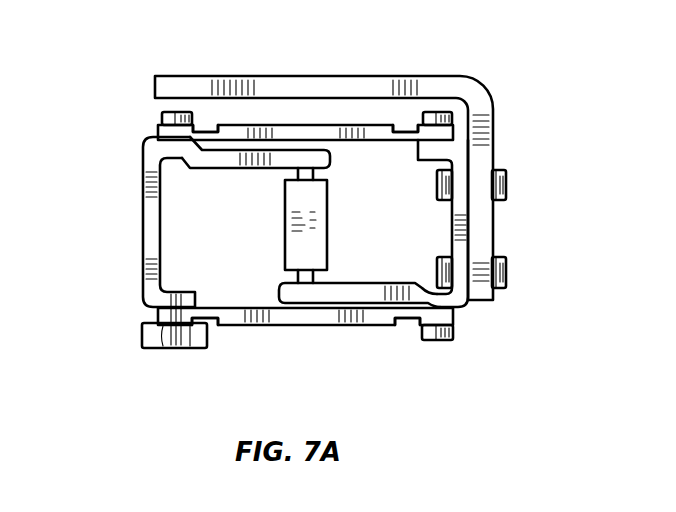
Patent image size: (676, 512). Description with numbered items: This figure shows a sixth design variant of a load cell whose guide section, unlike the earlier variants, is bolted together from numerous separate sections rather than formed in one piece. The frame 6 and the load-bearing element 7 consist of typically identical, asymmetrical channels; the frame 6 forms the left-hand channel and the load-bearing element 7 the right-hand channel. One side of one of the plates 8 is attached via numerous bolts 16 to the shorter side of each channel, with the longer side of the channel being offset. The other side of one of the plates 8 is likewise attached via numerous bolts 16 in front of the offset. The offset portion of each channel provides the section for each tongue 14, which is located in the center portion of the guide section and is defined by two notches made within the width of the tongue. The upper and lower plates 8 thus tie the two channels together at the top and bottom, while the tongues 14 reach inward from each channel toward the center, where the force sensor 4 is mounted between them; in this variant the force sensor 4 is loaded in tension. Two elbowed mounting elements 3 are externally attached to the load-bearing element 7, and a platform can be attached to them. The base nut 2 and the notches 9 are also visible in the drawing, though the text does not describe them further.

The base nut 2 is at (142, 335).
The elbowed mounting element 3 is at (364, 80).
The force sensor 4 is at (288, 232).
The frame 6 is at (148, 240).
The load-bearing element 7 is at (460, 221).
The plate 8 is at (322, 133).
The slot 9 is at (208, 126).
The tongue 14 is at (273, 150).
The bolt 16 is at (161, 118).